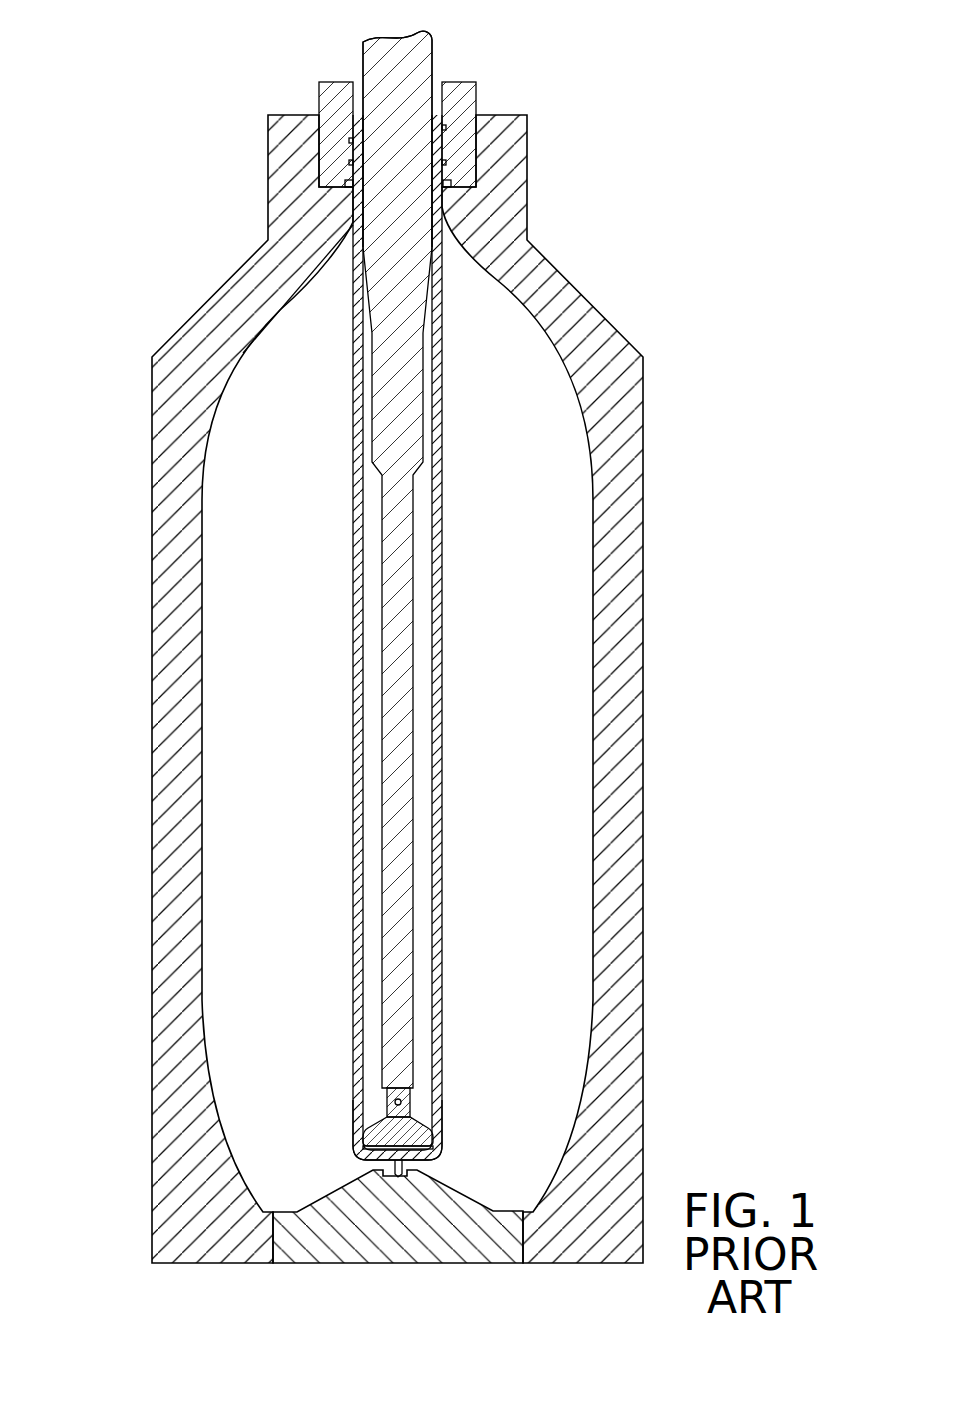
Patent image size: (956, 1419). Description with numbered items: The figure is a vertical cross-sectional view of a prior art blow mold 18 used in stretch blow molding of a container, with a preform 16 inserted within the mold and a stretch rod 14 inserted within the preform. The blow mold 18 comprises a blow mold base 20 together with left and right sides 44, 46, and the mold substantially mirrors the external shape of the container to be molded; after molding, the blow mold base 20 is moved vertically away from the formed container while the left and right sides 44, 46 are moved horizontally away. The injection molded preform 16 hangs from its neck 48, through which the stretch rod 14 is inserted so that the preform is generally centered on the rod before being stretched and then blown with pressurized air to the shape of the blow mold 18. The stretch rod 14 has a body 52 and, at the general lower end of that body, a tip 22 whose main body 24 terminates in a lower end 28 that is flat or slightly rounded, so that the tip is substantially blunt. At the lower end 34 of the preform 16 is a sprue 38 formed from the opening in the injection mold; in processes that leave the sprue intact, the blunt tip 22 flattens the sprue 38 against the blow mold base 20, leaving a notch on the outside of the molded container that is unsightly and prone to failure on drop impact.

The stretch rod 14 is at (417, 60).
The preform 16 is at (443, 918).
The blow mold 18 is at (398, 717).
The blow mold base 20 is at (418, 1245).
The tip 22 is at (427, 1110).
The main body 24 is at (415, 1135).
The lower end 28 is at (420, 1148).
The lower end 34 is at (344, 1111).
The sprue 38 is at (387, 1167).
The left side 44 is at (178, 760).
The right side 46 is at (617, 753).
The neck 48 is at (355, 101).
The body 52 is at (403, 753).